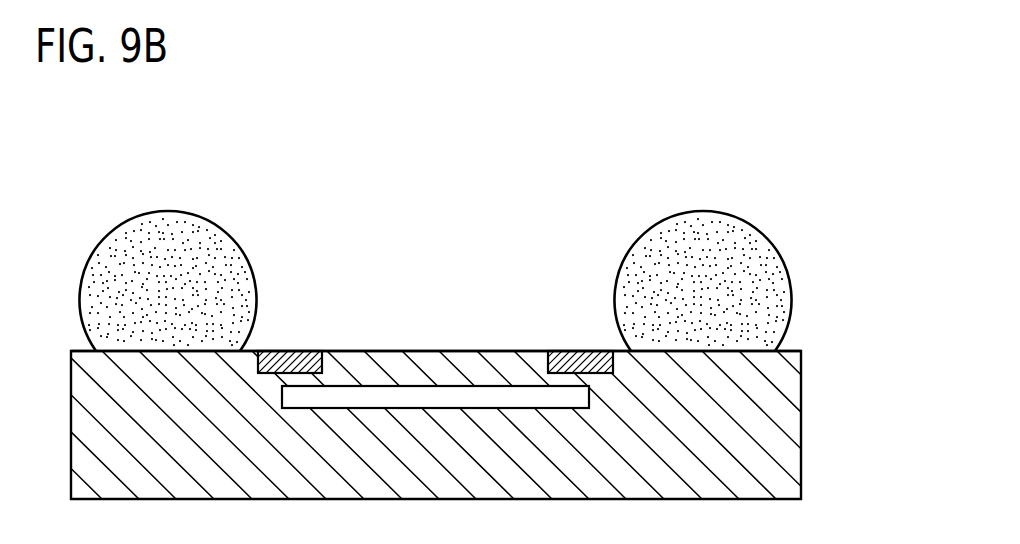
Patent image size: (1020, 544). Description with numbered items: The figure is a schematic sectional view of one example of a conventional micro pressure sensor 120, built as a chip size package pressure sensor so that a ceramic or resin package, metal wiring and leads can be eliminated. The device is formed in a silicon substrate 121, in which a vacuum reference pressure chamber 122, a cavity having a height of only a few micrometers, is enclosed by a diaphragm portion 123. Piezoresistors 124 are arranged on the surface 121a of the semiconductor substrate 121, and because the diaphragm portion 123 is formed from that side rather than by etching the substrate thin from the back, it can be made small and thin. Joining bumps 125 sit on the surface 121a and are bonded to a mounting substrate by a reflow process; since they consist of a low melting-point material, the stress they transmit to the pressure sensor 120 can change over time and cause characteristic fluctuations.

The micro pressure sensor 120 is at (703, 147).
The silicon substrate 121 is at (785, 413).
The surface of the semiconductor substrate 121a is at (345, 350).
The vacuum reference pressure chamber 122 is at (420, 395).
The diaphragm portion 123 is at (453, 363).
The piezoresistors 124 is at (288, 352).
The joining bumps 125 is at (740, 268).